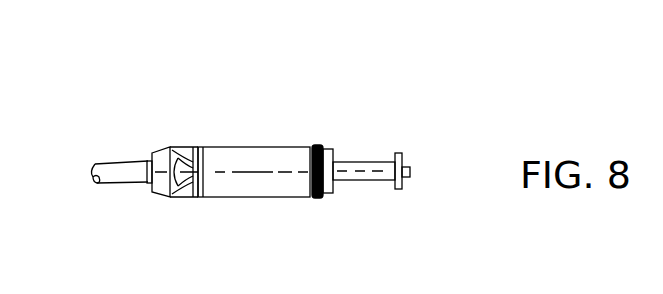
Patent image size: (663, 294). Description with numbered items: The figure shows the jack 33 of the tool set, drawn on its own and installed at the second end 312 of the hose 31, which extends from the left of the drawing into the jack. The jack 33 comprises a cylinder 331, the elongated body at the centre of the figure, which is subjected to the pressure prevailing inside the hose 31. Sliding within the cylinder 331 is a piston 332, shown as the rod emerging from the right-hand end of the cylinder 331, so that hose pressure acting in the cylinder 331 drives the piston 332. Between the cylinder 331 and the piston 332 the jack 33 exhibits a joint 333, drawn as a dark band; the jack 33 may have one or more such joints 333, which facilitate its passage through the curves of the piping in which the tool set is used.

The hose 31 is at (102, 126).
The second end 312 is at (123, 163).
The jack 33 is at (281, 152).
The cylinder 331 is at (268, 150).
The piston 332 is at (372, 162).
The joint 333 is at (318, 206).